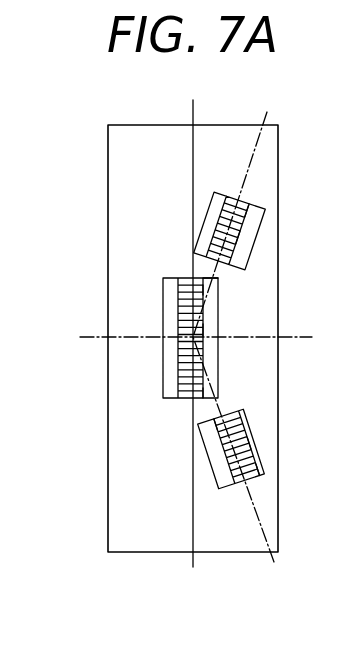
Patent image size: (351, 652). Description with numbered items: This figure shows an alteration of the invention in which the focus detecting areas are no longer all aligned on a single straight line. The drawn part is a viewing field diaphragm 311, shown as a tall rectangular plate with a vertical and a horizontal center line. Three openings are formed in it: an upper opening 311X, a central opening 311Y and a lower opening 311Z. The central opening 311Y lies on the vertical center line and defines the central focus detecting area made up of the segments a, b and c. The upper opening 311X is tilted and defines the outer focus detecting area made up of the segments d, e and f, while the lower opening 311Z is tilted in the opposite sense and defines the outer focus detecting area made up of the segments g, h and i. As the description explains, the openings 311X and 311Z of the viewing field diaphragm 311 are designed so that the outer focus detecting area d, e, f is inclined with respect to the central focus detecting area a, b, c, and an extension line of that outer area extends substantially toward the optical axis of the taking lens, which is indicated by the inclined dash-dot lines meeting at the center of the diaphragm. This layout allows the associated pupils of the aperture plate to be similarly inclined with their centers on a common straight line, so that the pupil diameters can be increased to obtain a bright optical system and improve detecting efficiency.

The viewing field diaphragm 311 is at (118, 165).
The opening 311X is at (205, 218).
The Y-direction detection element 311Y is at (163, 301).
The opening 311Z is at (208, 460).
The focus detecting area portion a is at (215, 282).
The focus detecting area portion b is at (205, 330).
The focus detecting area portion c is at (218, 396).
The focus detecting area portion d is at (243, 202).
The focus detecting area portion e is at (245, 237).
The focus detecting area portion f is at (218, 278).
The focus detecting area portion g is at (238, 481).
The focus detecting area portion h is at (238, 447).
The focus detecting area portion i is at (218, 412).